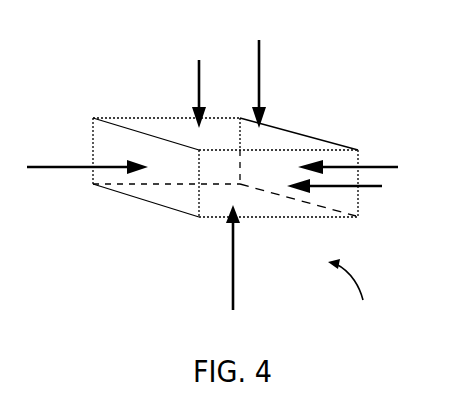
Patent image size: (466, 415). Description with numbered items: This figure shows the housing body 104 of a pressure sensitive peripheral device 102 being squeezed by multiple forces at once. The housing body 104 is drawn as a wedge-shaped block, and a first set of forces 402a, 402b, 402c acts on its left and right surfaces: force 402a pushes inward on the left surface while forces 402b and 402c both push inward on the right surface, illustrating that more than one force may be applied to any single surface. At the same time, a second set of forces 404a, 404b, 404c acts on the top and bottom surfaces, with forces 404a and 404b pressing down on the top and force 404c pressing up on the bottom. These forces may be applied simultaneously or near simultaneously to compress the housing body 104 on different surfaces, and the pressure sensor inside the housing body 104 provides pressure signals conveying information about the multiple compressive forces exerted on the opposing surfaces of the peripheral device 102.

The pressure sensitive peripheral device 102 is at (361, 292).
The housing body 104 is at (295, 128).
The first force of first set of forces 402a is at (37, 163).
The second force of first set of forces 402b is at (396, 166).
The third force of first set of forces 402c is at (383, 185).
The first force of second set of forces 404a is at (259, 40).
The second force of second set of forces 404b is at (199, 60).
The third force of second set of forces 404c is at (230, 263).